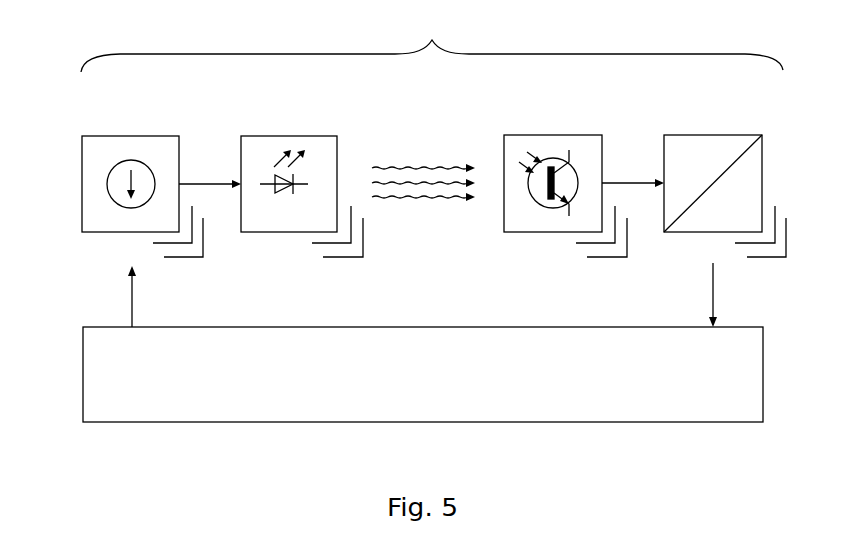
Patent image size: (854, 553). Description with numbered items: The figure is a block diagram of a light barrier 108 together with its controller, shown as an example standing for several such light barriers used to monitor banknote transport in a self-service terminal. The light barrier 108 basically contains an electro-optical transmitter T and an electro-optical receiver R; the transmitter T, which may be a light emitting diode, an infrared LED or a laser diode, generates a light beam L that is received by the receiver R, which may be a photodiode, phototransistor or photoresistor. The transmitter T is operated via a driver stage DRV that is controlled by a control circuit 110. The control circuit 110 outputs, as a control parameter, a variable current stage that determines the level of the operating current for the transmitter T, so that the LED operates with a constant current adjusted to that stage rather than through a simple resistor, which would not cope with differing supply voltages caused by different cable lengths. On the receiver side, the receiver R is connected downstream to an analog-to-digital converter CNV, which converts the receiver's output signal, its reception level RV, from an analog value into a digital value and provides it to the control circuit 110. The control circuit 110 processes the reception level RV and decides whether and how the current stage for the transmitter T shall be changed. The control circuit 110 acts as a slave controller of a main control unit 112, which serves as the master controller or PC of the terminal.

The light barrier 108 is at (432, 39).
The driver stage DRV is at (133, 136).
The electro-optical transmitter T is at (289, 136).
The light beam L is at (412, 167).
The electro-optical receiver R is at (557, 135).
The analog-to-digital converter CNV is at (712, 135).
The reception level RV is at (714, 297).
The main control unit 112 is at (423, 374).
The control circuit 110 is at (423, 374).